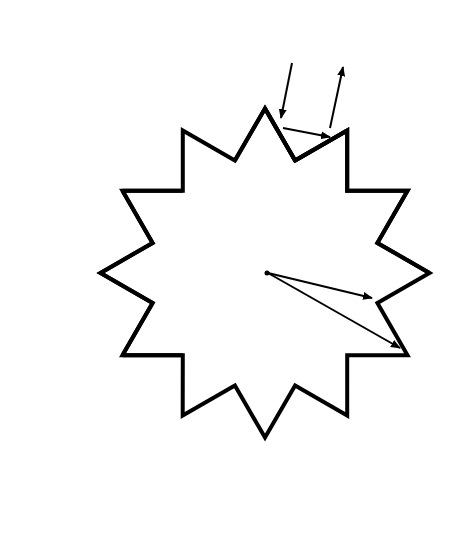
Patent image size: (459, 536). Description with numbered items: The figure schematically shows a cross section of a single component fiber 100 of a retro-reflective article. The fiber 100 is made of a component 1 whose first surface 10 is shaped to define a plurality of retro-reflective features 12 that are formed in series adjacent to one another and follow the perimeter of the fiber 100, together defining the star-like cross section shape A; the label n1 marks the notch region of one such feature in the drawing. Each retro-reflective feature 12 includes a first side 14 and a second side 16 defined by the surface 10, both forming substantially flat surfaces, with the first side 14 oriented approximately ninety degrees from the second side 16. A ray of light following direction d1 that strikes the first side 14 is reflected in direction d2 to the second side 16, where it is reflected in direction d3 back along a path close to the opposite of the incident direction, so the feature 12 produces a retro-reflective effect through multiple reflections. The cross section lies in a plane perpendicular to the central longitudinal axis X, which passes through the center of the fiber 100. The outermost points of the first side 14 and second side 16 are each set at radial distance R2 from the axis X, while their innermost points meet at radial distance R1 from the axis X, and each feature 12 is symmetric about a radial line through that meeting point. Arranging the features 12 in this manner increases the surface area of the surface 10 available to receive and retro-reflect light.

The single component fiber 100 is at (133, 65).
The first surface 10 is at (126, 189).
The component 1 is at (173, 282).
The retro-reflective feature 12 is at (296, 166).
The first side 14 is at (272, 111).
The second side 16 is at (305, 145).
The cross section shape A is at (137, 362).
The notch count label n1 is at (158, 213).
The direction d1 is at (278, 83).
The direction d2 is at (306, 121).
The direction d3 is at (350, 88).
The central longitudinal axis X is at (273, 308).
The radial distance R1 is at (320, 288).
The radial distance R2 is at (334, 310).